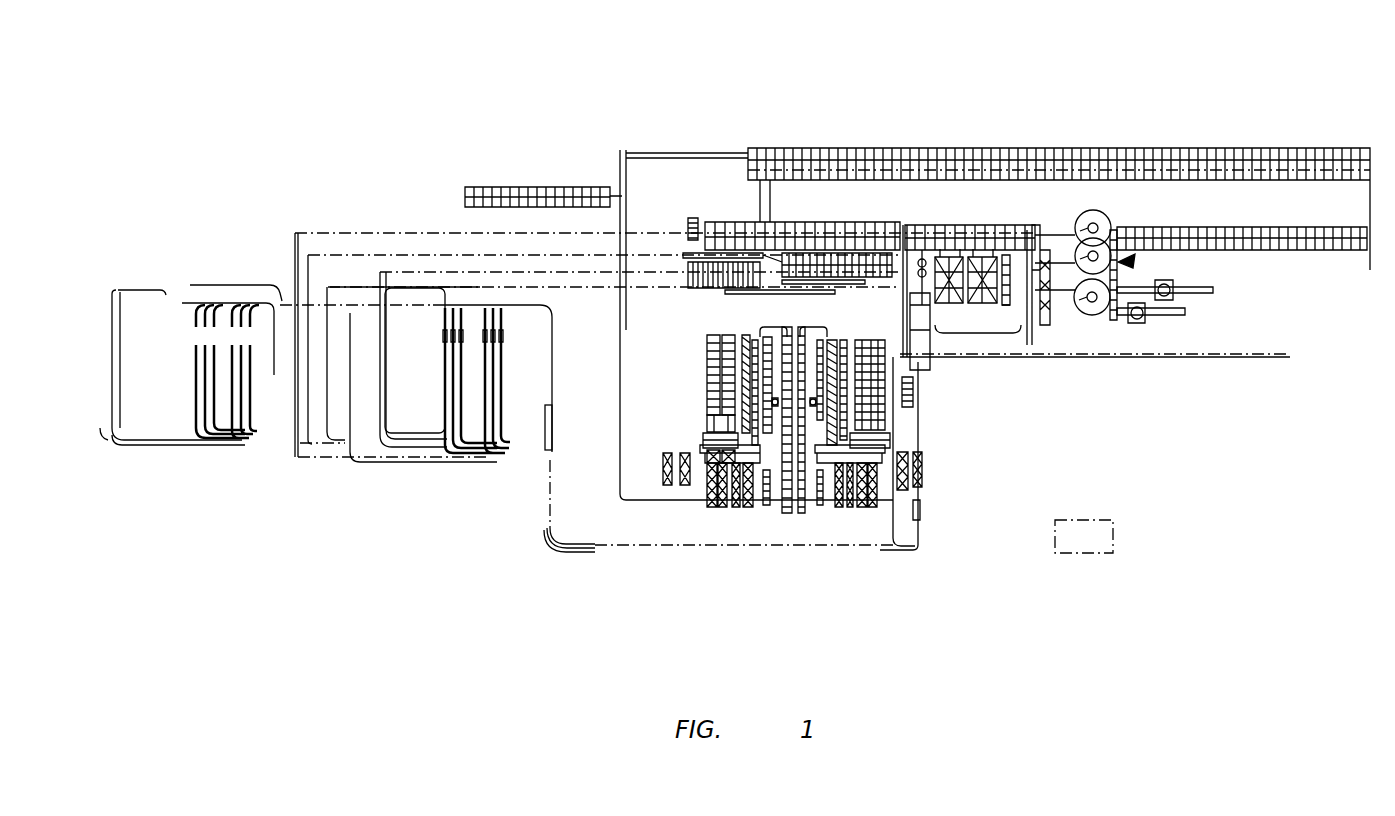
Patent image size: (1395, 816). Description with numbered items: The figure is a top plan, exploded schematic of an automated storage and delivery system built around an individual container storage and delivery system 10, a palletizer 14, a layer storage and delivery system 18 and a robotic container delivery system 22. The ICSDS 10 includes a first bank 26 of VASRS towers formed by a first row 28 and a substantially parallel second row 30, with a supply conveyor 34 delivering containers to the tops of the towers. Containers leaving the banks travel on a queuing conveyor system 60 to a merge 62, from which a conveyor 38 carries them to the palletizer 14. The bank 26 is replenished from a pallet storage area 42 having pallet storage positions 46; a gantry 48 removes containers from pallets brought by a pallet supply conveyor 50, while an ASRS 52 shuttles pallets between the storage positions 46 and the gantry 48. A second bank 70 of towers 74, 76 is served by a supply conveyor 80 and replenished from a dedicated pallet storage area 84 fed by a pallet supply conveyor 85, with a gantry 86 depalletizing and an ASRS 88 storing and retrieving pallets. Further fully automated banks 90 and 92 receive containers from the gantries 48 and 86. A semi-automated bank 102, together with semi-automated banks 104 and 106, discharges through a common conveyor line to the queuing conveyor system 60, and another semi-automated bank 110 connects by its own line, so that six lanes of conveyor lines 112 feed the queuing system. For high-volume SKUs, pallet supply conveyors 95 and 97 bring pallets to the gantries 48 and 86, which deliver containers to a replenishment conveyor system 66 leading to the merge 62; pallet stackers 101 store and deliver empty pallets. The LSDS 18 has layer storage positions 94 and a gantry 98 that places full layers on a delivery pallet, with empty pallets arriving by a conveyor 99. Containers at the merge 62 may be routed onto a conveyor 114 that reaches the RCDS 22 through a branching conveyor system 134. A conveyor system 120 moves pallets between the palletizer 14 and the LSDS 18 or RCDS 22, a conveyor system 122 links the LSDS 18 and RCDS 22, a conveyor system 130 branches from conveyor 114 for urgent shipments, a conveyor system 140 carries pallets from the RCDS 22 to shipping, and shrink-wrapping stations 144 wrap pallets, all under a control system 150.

The individual container storage and delivery system (ICSDS) 10 is at (727, 517).
The palletizer 14 is at (927, 338).
The layer storage and delivery system (LSDS) 18 is at (980, 333).
The robotic container delivery system (RCDS) 22 is at (1135, 262).
The first bank of VASRS towers 26 is at (707, 422).
The first row of towers 28 is at (733, 370).
The second row of towers 30 is at (715, 350).
The supply conveyor 34 is at (745, 362).
The conveyor 38 is at (530, 546).
The pallet storage area 42 is at (787, 518).
The pallet storage positions 46 is at (801, 525).
The gantry 48 is at (705, 446).
The pallet supply conveyor 50 is at (742, 512).
The automated storage and retrieval system (ASRS) 52 is at (770, 410).
The queuing conveyor system 60 is at (425, 460).
The merge 62 is at (553, 428).
The replenishment conveyor system 66 is at (190, 442).
The bank of VASRS towers 70 is at (880, 412).
The VASRS tower 74 is at (905, 455).
The VASRS tower 76 is at (880, 425).
The supply conveyor 80 is at (880, 420).
The pallet storage area 84 is at (819, 521).
The pallet supply conveyor 85 is at (850, 515).
The gantry 86 is at (915, 460).
The ASRS 88 is at (915, 392).
The VASRS bank 90 is at (839, 251).
The VASRS bank 92 is at (692, 268).
The layer storage positions 94 is at (964, 296).
The pallet supply conveyors 95 is at (710, 515).
The pallet supply conveyors 97 is at (917, 520).
The gantry 98 is at (978, 256).
The conveyor 99 is at (998, 322).
The pallet stackers 101 is at (665, 485).
The bank of VASRS towers 102 is at (1160, 228).
The semi-automated bank 104 is at (832, 150).
The semi-automated bank 106 is at (526, 185).
The semi-automated bank 110 is at (755, 220).
The conveyor lines 112 is at (493, 336).
The conveyor 114 is at (570, 553).
The conveyor system 120 is at (915, 251).
The conveyor system 122 is at (1093, 222).
The conveyor system 130 is at (1230, 356).
The branching conveyor system 134 is at (1035, 330).
The conveyor system 140 is at (1193, 290).
The shrink-wrapping stations 144 is at (1143, 319).
The control system 150 is at (1113, 537).